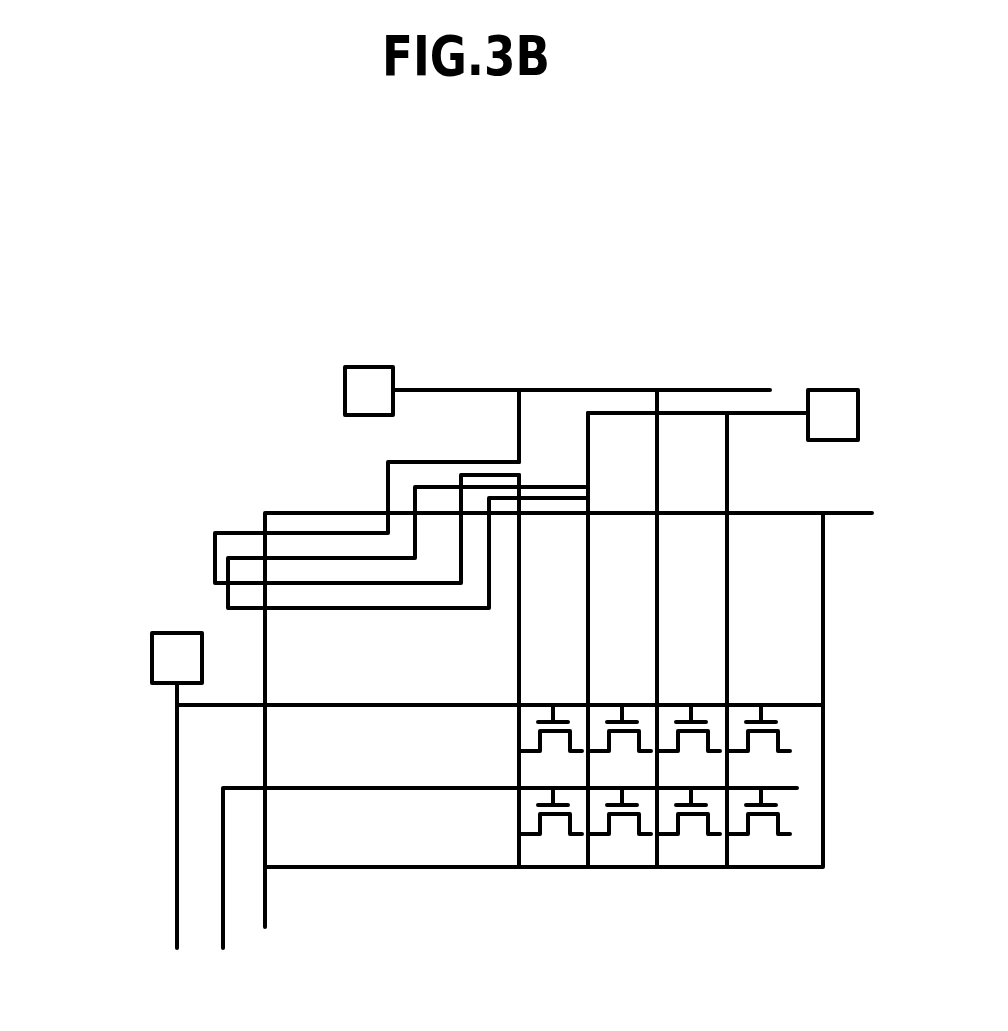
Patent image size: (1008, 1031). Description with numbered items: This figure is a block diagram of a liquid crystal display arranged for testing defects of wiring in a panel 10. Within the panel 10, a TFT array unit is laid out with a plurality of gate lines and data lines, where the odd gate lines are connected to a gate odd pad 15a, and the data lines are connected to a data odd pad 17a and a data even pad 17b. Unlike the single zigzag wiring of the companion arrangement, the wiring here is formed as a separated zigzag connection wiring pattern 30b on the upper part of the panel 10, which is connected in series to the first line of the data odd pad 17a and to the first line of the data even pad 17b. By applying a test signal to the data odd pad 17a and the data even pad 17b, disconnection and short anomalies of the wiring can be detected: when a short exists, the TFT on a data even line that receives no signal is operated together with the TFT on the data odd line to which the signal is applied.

The panel 10 is at (277, 667).
The gate odd pad 15a is at (165, 658).
The data odd pad 17a is at (368, 377).
The data even pad 17b is at (840, 408).
The separated zigzag connection wiring pattern 30b is at (300, 532).